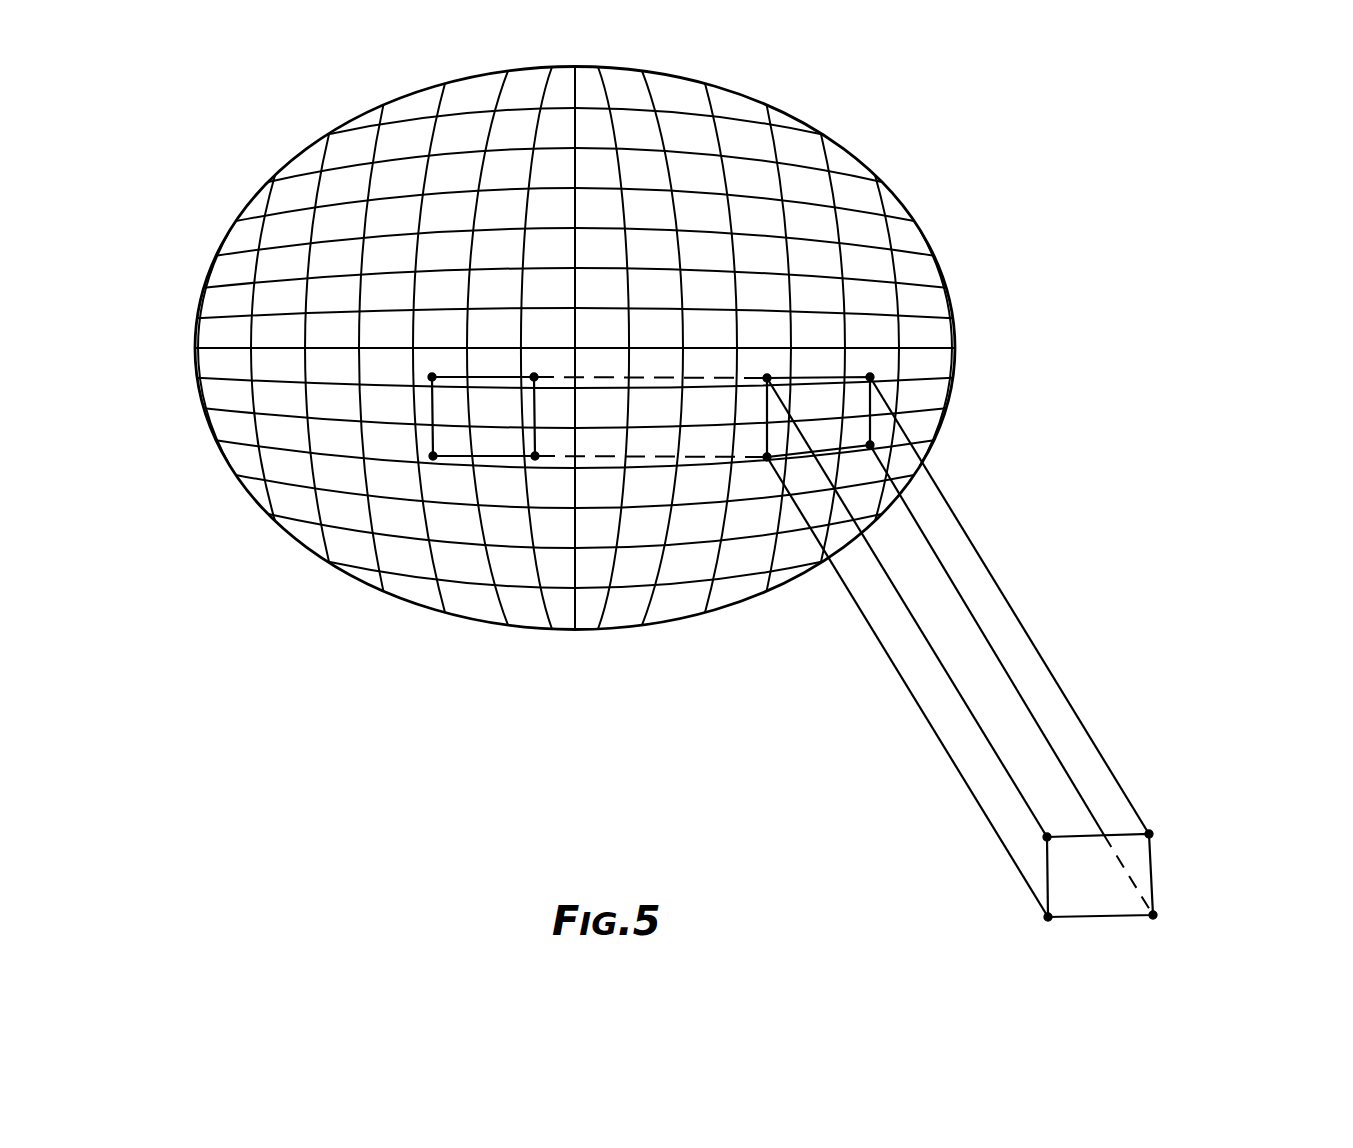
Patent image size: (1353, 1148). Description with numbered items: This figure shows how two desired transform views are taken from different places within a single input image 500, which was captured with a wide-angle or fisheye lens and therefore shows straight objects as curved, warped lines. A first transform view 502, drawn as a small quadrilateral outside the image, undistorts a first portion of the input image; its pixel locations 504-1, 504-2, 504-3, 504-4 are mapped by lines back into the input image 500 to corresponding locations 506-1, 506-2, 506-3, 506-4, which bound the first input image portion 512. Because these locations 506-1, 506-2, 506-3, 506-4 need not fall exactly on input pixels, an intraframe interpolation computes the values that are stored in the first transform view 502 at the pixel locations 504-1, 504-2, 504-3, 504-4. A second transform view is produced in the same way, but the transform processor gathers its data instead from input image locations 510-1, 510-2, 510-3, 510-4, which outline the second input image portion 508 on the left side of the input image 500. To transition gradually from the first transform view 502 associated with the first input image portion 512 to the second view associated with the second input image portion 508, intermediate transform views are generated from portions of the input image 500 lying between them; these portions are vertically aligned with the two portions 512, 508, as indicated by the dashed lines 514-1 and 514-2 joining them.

The input image 500 is at (783, 112).
The first transform view 502 is at (1135, 860).
The pixel location 504-1 is at (1047, 837).
The pixel location 504-2 is at (1149, 834).
The pixel location 504-3 is at (1048, 917).
The pixel location 504-4 is at (1153, 915).
The location in input image 506-1 is at (767, 378).
The location in input image 506-2 is at (870, 377).
The location in input image 506-3 is at (767, 456).
The location in input image 506-4 is at (870, 445).
The second input image portion 508 is at (437, 412).
The input image location 510-1 is at (432, 376).
The input image location 510-2 is at (535, 378).
The input image location 510-3 is at (433, 456).
The input image location 510-4 is at (537, 456).
The first input image portion 512 is at (857, 408).
The alignment line 514-1 is at (720, 378).
The alignment line 514-2 is at (662, 456).